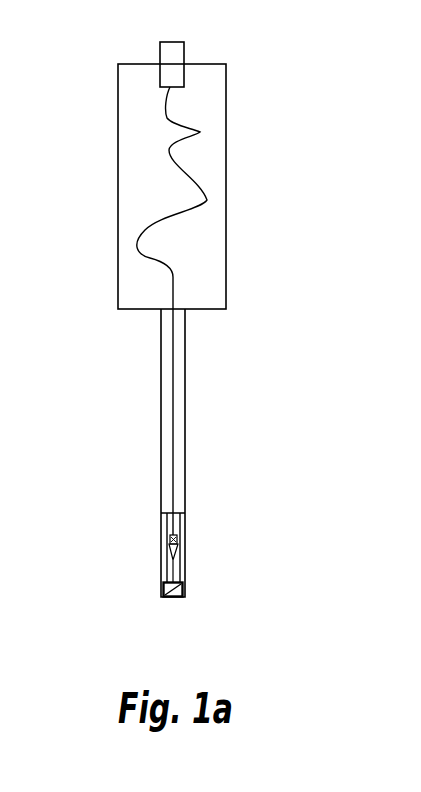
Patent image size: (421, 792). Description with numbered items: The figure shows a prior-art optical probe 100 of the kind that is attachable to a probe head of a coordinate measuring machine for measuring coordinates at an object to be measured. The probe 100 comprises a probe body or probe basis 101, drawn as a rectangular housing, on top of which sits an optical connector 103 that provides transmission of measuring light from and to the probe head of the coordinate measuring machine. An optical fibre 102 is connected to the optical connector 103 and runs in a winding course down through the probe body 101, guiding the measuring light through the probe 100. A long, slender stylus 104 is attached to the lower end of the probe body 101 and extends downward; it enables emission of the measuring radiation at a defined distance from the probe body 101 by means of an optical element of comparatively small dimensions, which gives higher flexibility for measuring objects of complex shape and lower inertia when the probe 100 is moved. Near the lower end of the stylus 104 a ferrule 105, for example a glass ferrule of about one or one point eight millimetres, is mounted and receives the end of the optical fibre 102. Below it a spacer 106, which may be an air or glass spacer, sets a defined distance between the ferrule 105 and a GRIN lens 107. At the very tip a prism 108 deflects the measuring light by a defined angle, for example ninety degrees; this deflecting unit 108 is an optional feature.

The optical probe 100 is at (245, 40).
The probe body 101 is at (217, 133).
The optical fibre 102 is at (205, 200).
The optical connector 103 is at (165, 52).
The stylus 104 is at (178, 378).
The ferrule 105 is at (175, 523).
The spacer 106 is at (175, 540).
The GRIN lens 107 is at (173, 568).
The prism 108 is at (165, 588).